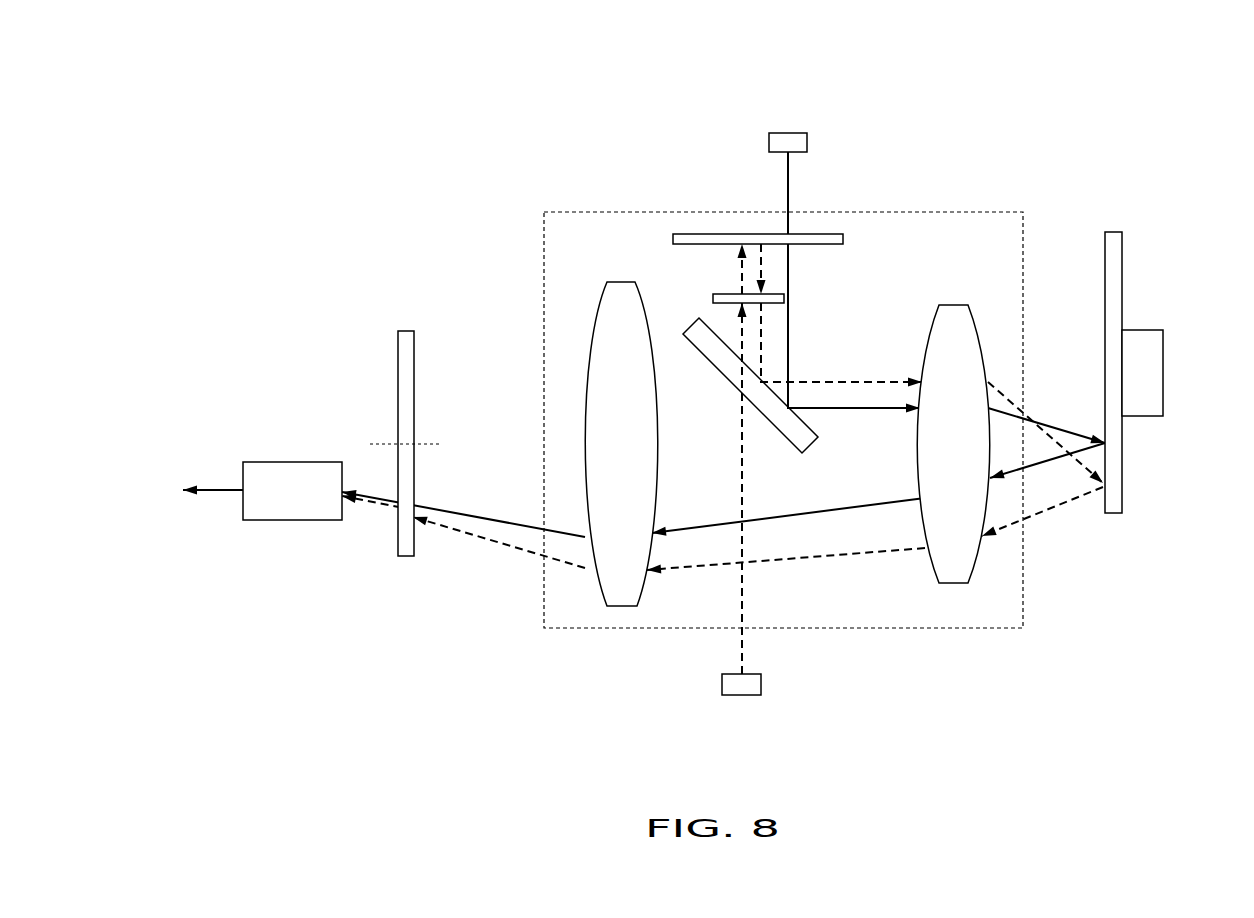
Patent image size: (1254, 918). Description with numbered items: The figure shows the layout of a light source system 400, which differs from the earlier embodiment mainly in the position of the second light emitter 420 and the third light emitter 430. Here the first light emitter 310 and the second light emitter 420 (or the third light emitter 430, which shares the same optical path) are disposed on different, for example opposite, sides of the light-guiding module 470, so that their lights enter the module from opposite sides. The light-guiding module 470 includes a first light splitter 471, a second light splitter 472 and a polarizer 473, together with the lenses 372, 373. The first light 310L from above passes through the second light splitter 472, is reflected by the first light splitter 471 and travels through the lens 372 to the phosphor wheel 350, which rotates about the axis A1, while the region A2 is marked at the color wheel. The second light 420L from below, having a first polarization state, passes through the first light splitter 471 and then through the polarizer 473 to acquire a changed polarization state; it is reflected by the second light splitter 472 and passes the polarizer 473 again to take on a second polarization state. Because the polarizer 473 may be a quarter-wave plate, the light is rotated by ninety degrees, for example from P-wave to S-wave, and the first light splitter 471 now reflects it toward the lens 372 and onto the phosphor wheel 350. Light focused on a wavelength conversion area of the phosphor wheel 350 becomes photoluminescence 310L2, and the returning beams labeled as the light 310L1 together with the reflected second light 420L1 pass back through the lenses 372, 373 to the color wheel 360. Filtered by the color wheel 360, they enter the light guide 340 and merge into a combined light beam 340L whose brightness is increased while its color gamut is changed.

The light source system 400 is at (222, 52).
The first light emitter 310 is at (790, 133).
The first light 310L is at (788, 183).
The first light beam portion 310L1 is at (785, 496).
The photoluminescence 310L2 is at (1048, 462).
The light guide 340 is at (290, 520).
The combined light beam 340L is at (210, 495).
The phosphor wheel 350 is at (1114, 232).
The color wheel 360 is at (406, 331).
The lens 372 is at (955, 305).
The lens 373 is at (600, 310).
The second light emitter 420 is at (765, 721).
The third light emitter 430 is at (742, 695).
The second light 420L is at (742, 650).
The reflected light beam 420L1 is at (1043, 512).
The light-guiding module 470 is at (583, 628).
The first light splitter 471 is at (787, 438).
The second light splitter 472 is at (673, 239).
The polarizer 473 is at (713, 298).
The axis A1 is at (1163, 372).
The area A2 is at (430, 445).